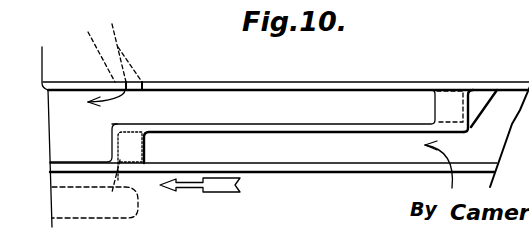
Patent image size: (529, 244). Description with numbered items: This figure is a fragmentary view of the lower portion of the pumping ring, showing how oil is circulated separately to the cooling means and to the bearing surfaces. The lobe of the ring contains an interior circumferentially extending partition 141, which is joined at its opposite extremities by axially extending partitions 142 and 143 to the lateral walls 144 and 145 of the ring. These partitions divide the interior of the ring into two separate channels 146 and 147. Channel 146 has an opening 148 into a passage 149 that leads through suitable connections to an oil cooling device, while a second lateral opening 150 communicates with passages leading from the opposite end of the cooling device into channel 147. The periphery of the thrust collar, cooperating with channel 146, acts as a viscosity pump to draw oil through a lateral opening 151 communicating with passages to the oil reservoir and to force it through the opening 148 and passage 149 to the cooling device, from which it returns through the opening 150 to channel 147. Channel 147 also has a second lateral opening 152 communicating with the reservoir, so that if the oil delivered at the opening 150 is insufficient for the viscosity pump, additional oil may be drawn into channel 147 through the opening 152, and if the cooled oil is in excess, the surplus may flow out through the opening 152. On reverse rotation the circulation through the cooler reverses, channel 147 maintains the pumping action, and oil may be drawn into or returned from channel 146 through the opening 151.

The interior circumferentially extending partition 141 is at (278, 127).
The axially extending partition 142 is at (123, 126).
The axially extending partition 143 is at (458, 95).
The lateral wall 144 is at (272, 172).
The lateral wall 145 is at (236, 82).
The channel 146 is at (362, 155).
The channel 147 is at (377, 98).
The opening 148 is at (136, 168).
The passage 149 is at (106, 208).
The second lateral opening 150 is at (442, 87).
The lateral opening 151 is at (459, 163).
The second lateral opening 152 is at (119, 52).